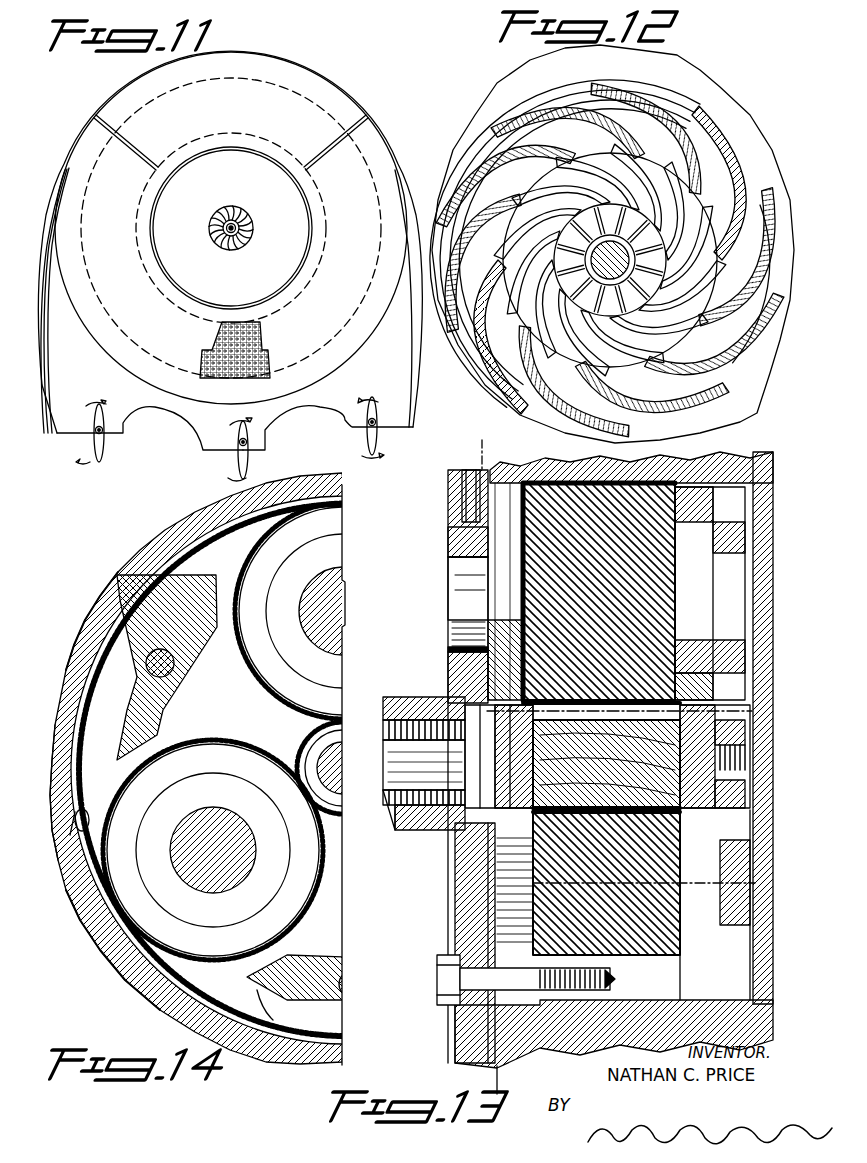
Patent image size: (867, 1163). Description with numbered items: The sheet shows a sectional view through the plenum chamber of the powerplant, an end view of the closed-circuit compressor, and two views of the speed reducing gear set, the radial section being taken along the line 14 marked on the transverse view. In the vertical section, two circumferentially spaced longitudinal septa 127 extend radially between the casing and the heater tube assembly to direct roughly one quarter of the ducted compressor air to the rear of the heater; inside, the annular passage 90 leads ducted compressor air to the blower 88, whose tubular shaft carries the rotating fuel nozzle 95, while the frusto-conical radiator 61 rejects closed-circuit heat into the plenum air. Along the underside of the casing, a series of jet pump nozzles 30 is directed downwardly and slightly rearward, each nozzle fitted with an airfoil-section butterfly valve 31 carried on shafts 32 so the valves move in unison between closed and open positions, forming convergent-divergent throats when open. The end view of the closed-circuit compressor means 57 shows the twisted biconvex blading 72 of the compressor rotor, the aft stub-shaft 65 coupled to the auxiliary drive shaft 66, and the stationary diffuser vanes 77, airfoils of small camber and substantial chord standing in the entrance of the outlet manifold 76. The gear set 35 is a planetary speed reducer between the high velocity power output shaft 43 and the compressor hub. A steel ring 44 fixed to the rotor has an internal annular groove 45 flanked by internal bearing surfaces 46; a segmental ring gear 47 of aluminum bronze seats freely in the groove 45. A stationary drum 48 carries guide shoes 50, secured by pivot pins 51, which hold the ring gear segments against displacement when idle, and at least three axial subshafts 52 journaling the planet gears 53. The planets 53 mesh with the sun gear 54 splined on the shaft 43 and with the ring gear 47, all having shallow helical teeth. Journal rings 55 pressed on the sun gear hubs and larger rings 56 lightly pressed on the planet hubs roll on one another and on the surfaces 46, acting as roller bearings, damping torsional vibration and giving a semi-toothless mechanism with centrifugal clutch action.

In FIG. 13, the section line 14- 14 is at (480, 452).
In FIG. 11, the jet pump nozzles 30 is at (330, 433).
In FIG. 11, the butterfly valve 31 is at (104, 446).
In FIG. 11, the shafts 32 is at (104, 424).
In FIG. 13, the planetary gear set 35 is at (505, 613).
In FIG. 14, the planetary gear set 35 is at (90, 930).
In FIG. 13, the power output shaft 43 is at (437, 768).
In FIG. 14, the power output shaft 43 is at (332, 793).
In FIG. 13, the ring 44 is at (470, 500).
In FIG. 14, the ring 44 is at (165, 545).
In FIG. 13, the internal annular groove 45 is at (660, 462).
In FIG. 13, the internal bearing surfaces 46 is at (723, 497).
In FIG. 14, the internal bearing surfaces 46 is at (76, 830).
In FIG. 13, the ring gear 47 is at (448, 512).
In FIG. 14, the ring gear 47 is at (100, 640).
In FIG. 13, the stationary drum 48 is at (470, 870).
In FIG. 14, the stationary drum 48 is at (266, 725).
In FIG. 13, the guide shoes 50 is at (485, 965).
In FIG. 14, the guide shoes 50 is at (178, 705).
In FIG. 13, the pivot pins 51 is at (478, 968).
In FIG. 14, the pivot pins 51 is at (172, 667).
In FIG. 13, the axial subshafts 52 is at (732, 583).
In FIG. 14, the axial subshafts 52 is at (326, 592).
In FIG. 13, the planet gears 53 is at (690, 613).
In FIG. 14, the planet gears 53 is at (330, 515).
In FIG. 13, the sun gear 54 is at (680, 812).
In FIG. 14, the sun gear 54 is at (355, 712).
In FIG. 13, the journal rings 55 is at (470, 712).
In FIG. 13, the rings 56 is at (448, 527).
In FIG. 14, the rings 56 is at (155, 982).
In FIG. 12, the compressor means 57 is at (568, 168).
In FIG. 11, the radiator 61 is at (274, 344).
In FIG. 12, the aft stub-shaft 65 is at (513, 185).
In FIG. 12, the auxiliary drive shaft 66 is at (522, 338).
In FIG. 12, the compressor blading 72 is at (663, 203).
In FIG. 12, the compressor outlet manifold 76 is at (678, 78).
In FIG. 12, the stationary diffuser vanes 77 is at (722, 332).
In FIG. 11, the blower 88 is at (238, 252).
In FIG. 11, the annular passage 90 is at (304, 236).
In FIG. 11, the nozzle 95 is at (232, 206).
In FIG. 11, the septa 127 is at (328, 143).